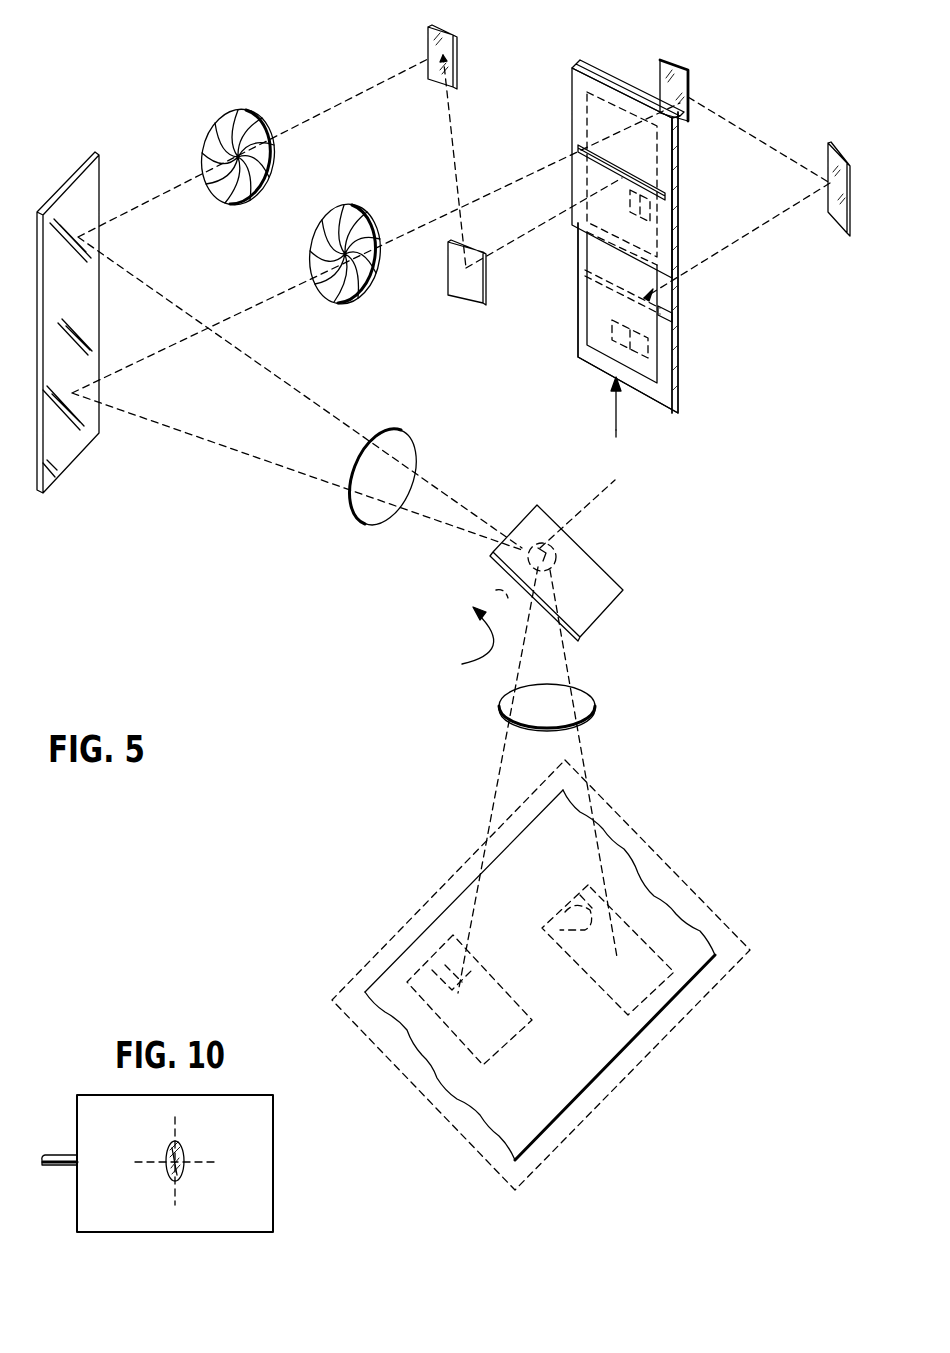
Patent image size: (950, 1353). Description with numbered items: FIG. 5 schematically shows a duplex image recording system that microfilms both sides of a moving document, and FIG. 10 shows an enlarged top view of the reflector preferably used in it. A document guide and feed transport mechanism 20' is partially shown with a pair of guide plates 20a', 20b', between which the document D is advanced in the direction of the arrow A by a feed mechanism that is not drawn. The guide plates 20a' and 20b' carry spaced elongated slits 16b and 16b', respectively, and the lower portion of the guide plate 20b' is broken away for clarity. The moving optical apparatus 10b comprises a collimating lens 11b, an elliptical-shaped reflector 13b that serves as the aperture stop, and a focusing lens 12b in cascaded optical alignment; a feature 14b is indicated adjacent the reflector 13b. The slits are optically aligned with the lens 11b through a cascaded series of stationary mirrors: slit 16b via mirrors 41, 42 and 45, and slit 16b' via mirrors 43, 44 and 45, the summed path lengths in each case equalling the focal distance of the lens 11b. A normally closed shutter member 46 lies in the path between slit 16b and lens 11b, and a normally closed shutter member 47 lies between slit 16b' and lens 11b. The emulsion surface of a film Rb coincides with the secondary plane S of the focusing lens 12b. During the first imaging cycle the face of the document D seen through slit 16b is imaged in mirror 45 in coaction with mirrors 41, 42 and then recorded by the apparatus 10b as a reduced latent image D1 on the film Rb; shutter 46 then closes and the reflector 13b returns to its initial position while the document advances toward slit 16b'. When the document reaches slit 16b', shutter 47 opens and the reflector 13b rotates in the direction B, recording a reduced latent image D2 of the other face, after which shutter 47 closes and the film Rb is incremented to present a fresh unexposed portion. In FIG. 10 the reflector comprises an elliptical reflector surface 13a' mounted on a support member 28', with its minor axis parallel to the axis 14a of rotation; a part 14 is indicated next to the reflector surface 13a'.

In FIG. 5, the stationary mirror reflector 41 is at (832, 143).
In FIG. 5, the stationary mirror reflector 42 is at (690, 72).
In FIG. 5, the stationary mirror reflector 43 is at (463, 298).
In FIG. 5, the stationary mirror reflector 44 is at (458, 55).
In FIG. 5, the stationary mirror reflector 45 is at (98, 185).
In FIG. 5, the shutter member 46 is at (357, 300).
In FIG. 5, the shutter member 47 is at (248, 118).
In FIG. 5, the document guide and feed transport mechanism 20' is at (600, 226).
In FIG. 5, the guide plate 20a' is at (656, 264).
In FIG. 5, the guide plate 20b' is at (604, 169).
In FIG. 5, the elongated slit 16b is at (656, 299).
In FIG. 5, the elongated slit 16b' is at (621, 167).
In FIG. 5, the document D is at (673, 223).
In FIG. 5, the direction of document advance A is at (612, 404).
In FIG. 5, the collimating lens 11b is at (402, 440).
In FIG. 5, the moving optical apparatus 10b is at (511, 478).
In FIG. 5, the elliptical-shaped reflector 13b is at (556, 524).
In FIG. 5, the pivot axis 14b is at (504, 607).
In FIG. 5, the direction of reflector rotation B is at (468, 656).
In FIG. 5, the focusing lens 12b is at (590, 712).
In FIG. 5, the secondary plane S is at (668, 866).
In FIG. 5, the film Rb is at (598, 1072).
In FIG. 5, the reduced latent image D1 is at (698, 995).
In FIG. 5, the reduced latent image D2 is at (411, 967).
In FIG. 10, the support member 28' is at (194, 1163).
In FIG. 10, the axis of rotation 14a is at (62, 1170).
In FIG. 10, the reflector surface 13a' is at (188, 1161).
In FIG. 10, the pivot 14 is at (182, 1178).